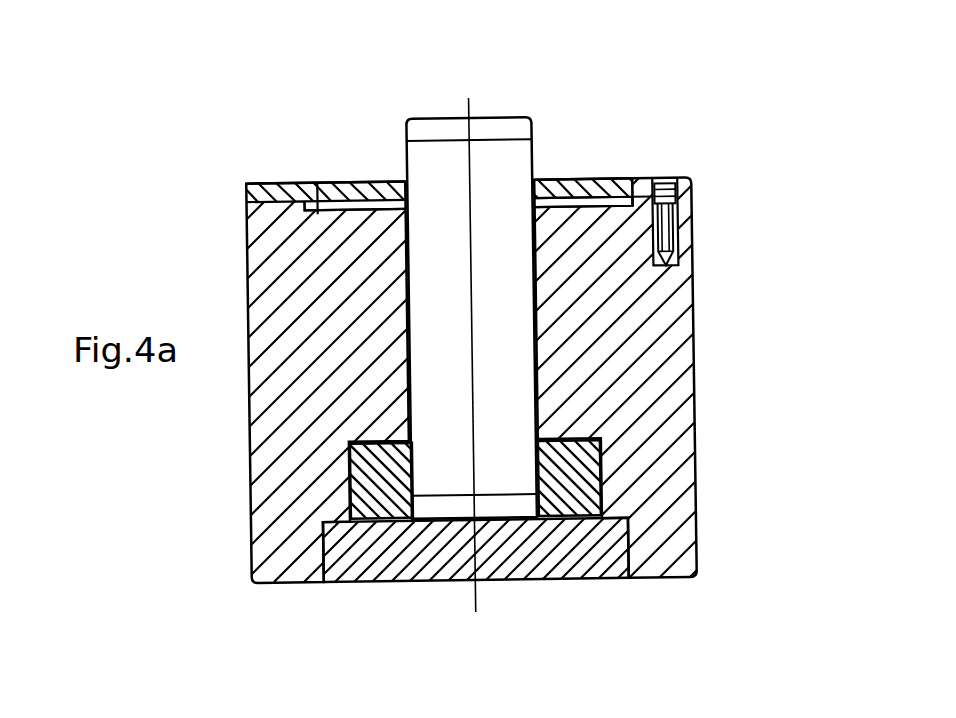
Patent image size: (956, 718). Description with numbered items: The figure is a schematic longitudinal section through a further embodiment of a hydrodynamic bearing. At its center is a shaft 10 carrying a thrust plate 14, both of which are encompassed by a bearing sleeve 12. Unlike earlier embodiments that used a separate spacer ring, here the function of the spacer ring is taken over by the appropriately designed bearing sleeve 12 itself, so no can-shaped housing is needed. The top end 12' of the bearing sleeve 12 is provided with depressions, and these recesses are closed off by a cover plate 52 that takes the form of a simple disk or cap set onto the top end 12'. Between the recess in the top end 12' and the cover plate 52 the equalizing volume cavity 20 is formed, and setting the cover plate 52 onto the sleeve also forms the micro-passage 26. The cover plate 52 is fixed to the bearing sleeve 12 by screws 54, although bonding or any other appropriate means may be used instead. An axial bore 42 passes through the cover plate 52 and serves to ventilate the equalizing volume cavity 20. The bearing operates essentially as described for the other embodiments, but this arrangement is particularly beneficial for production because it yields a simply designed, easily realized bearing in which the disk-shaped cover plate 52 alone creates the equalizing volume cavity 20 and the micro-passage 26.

The shaft 10 is at (495, 298).
The bearing sleeve 12 is at (478, 380).
The top end of the bearing sleeve 12' is at (582, 111).
The thrust plate 14 is at (570, 477).
The equalizing volume cavity 20 is at (641, 182).
The micro-passage 26 is at (559, 182).
The axial bore 42 is at (318, 200).
The cover plate 52 is at (377, 182).
The screws 54 is at (687, 222).